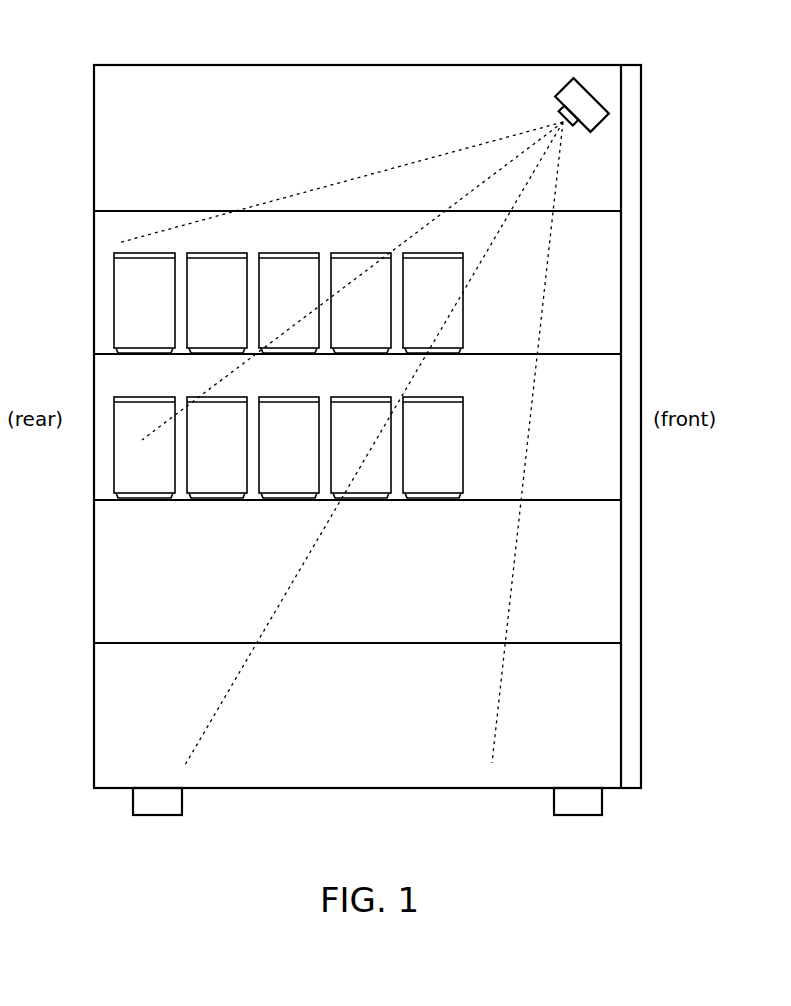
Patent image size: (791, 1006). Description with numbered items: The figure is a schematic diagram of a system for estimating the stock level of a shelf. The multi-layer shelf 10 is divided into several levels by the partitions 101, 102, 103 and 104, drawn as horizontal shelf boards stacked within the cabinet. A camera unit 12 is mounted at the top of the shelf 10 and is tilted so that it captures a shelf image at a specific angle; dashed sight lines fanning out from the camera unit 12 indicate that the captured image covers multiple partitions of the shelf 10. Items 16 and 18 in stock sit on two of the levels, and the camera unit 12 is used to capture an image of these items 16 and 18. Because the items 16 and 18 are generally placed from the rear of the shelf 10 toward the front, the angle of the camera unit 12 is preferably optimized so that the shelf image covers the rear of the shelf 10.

The multi-layer shelf 10 is at (172, 64).
The camera unit 12 is at (583, 105).
The item 16 is at (133, 312).
The item 18 is at (133, 470).
The partition 101 is at (590, 209).
The partition 102 is at (590, 352).
The partition 103 is at (590, 498).
The partition 104 is at (590, 641).